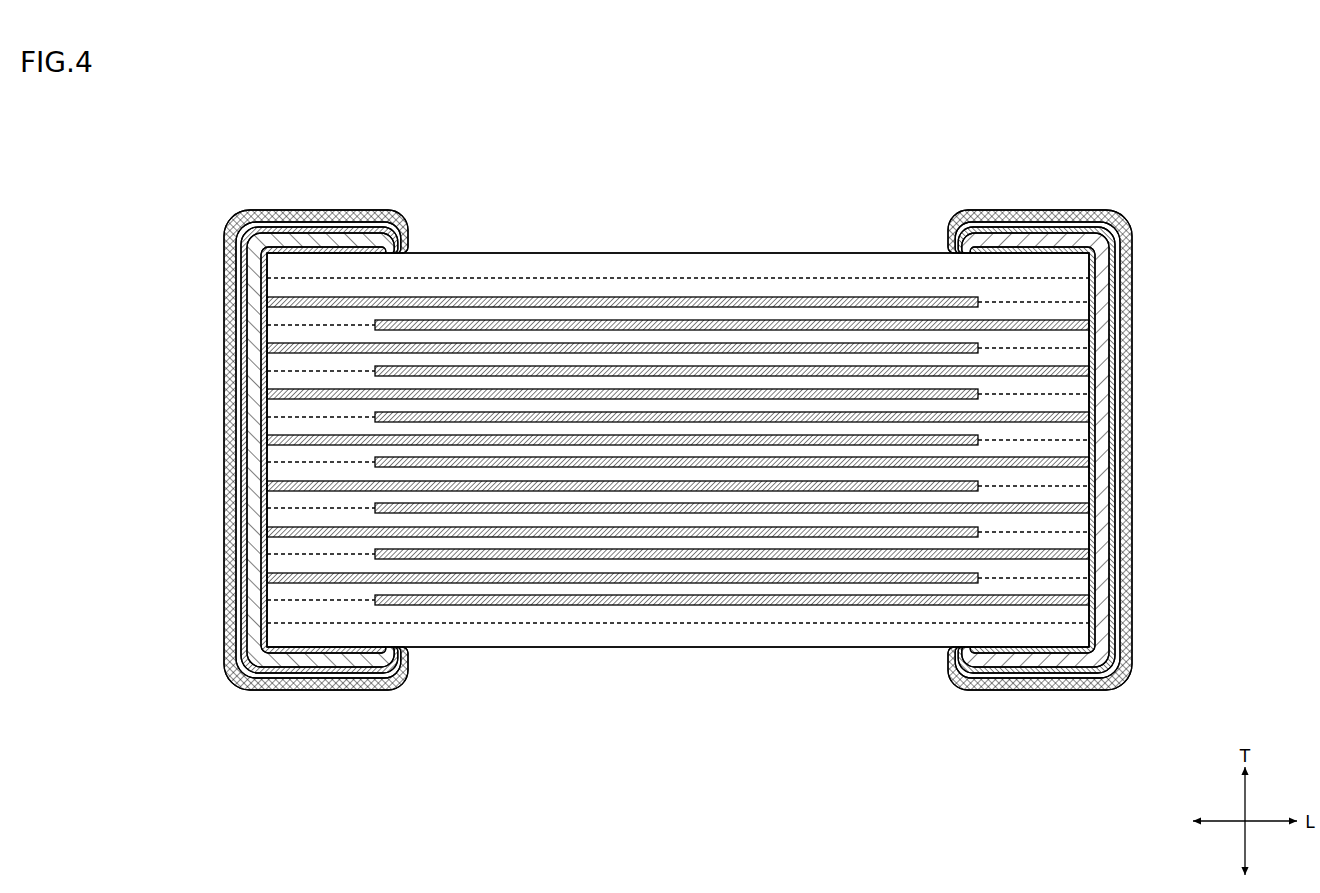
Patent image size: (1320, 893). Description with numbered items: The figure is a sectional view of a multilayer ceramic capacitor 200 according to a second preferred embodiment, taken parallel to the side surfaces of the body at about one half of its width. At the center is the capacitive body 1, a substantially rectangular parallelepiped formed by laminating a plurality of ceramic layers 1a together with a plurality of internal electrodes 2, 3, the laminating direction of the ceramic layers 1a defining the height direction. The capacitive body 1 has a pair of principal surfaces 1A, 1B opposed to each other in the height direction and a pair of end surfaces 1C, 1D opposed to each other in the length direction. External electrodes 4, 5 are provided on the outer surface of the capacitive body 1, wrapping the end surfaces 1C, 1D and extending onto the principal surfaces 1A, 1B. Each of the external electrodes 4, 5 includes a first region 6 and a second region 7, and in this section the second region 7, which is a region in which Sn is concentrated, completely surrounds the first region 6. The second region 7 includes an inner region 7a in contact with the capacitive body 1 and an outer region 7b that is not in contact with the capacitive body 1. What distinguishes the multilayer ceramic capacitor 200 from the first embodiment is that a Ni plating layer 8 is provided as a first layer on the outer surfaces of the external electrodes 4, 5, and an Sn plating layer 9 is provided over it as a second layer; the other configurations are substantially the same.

The multilayer ceramic capacitor 200 is at (172, 88).
The capacitive body 1 is at (423, 265).
The ceramic layers 1a is at (470, 267).
The principal surface 1A is at (718, 660).
The principal surface 1B is at (720, 248).
The end surface 1C is at (220, 466).
The end surface 1D is at (1137, 462).
The internal electrode 2 is at (750, 295).
The internal electrode 3 is at (778, 320).
The external electrode 4 is at (228, 202).
The external electrode 5 is at (1127, 201).
The first region 6 is at (230, 314).
The second region 7 is at (679, 450).
The inner region 7a is at (228, 371).
The outer region 7b is at (226, 346).
The Ni plating layer 8 is at (230, 396).
The Sn plating layer 9 is at (232, 424).